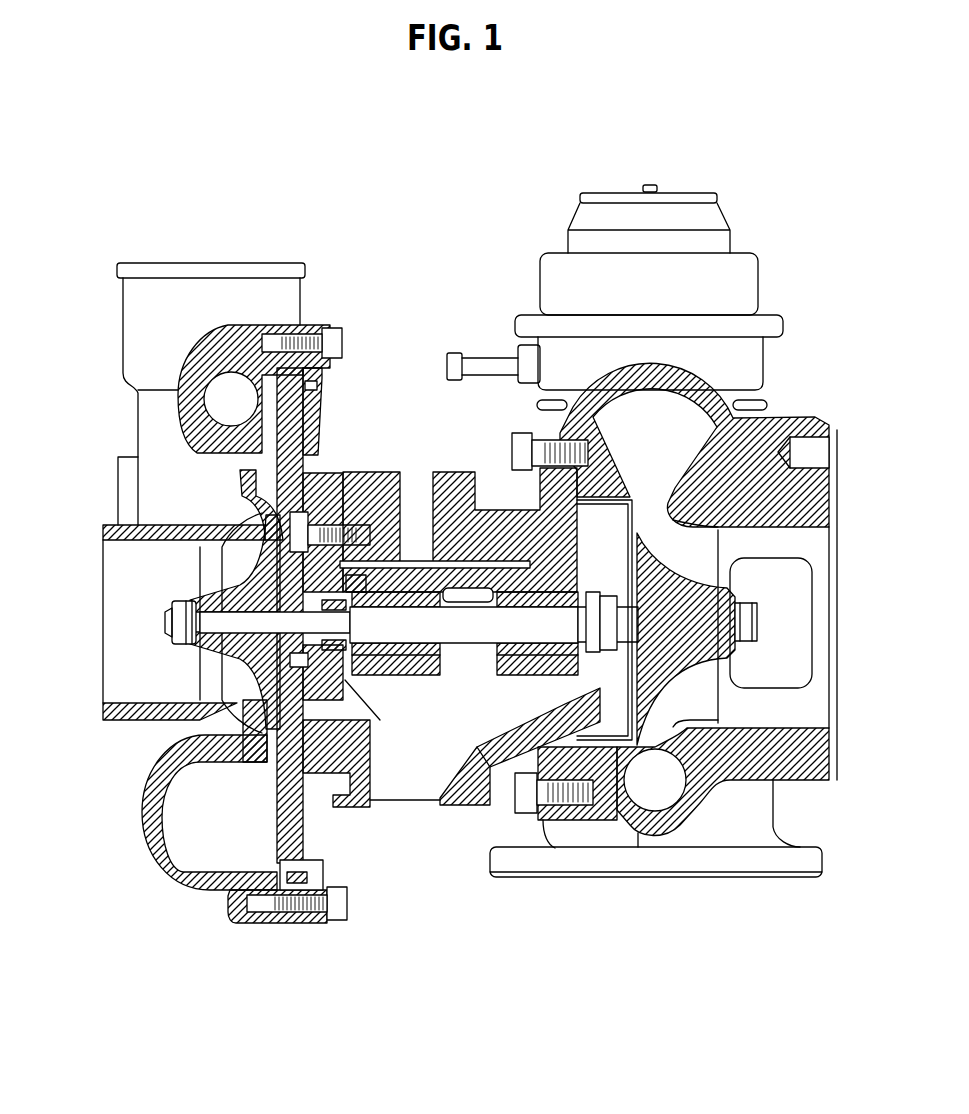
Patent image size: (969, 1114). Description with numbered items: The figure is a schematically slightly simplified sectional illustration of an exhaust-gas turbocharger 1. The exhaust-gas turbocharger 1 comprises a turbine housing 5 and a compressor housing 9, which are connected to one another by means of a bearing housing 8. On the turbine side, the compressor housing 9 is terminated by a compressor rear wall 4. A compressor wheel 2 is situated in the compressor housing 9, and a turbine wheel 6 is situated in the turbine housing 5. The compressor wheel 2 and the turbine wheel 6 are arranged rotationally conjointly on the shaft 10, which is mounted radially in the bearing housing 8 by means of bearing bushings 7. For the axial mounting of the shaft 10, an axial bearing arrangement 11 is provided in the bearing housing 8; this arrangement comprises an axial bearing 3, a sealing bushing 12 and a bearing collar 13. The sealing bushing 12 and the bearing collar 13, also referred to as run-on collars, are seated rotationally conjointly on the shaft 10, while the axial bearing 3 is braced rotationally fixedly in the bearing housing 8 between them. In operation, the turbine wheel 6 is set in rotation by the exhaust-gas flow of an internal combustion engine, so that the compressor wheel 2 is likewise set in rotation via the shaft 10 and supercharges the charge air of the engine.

The exhaust-gas turbocharger 1 is at (181, 146).
The compressor wheel 2 is at (262, 593).
The axial bearing 3 is at (337, 665).
The compressor rear wall 4 is at (287, 833).
The turbine housing 5 is at (730, 437).
The turbine wheel 6 is at (648, 566).
The bearing bushings 7 is at (392, 650).
The bearing housing 8 is at (496, 755).
The compressor housing 9 is at (193, 367).
The shaft 10 is at (460, 623).
The axial bearing arrangement 11 is at (355, 675).
The sealing bushing 12 is at (304, 644).
The bearing collar 13 is at (363, 582).